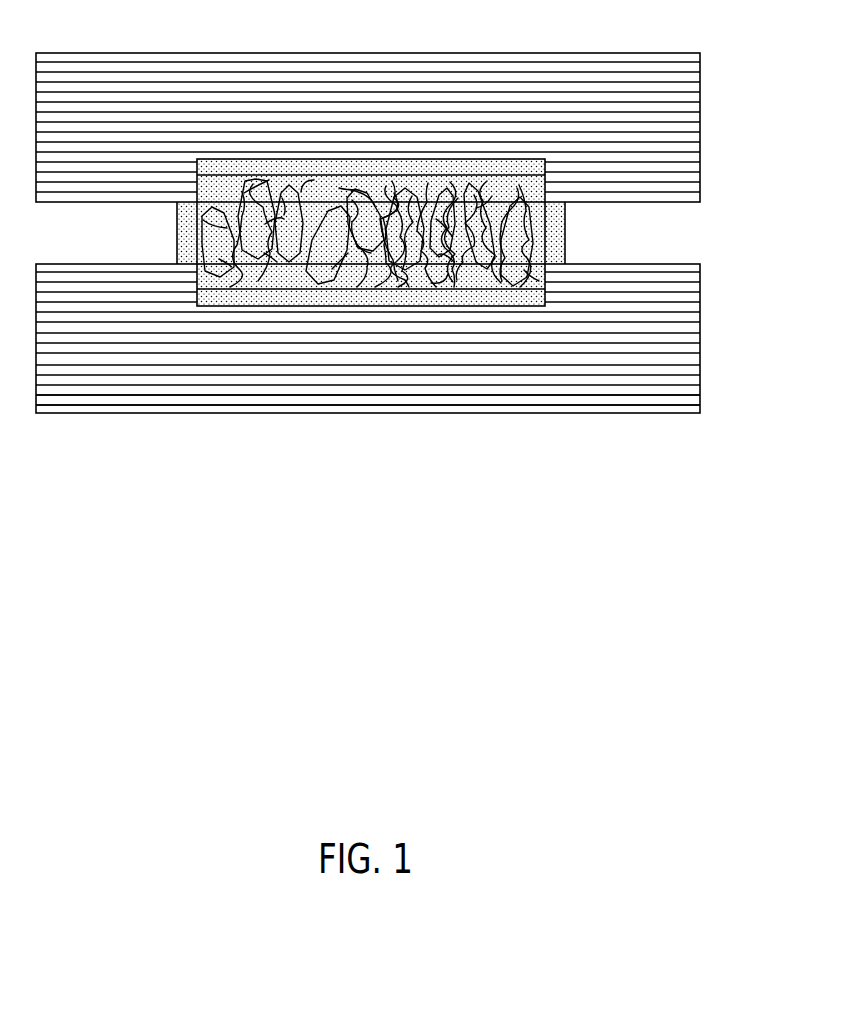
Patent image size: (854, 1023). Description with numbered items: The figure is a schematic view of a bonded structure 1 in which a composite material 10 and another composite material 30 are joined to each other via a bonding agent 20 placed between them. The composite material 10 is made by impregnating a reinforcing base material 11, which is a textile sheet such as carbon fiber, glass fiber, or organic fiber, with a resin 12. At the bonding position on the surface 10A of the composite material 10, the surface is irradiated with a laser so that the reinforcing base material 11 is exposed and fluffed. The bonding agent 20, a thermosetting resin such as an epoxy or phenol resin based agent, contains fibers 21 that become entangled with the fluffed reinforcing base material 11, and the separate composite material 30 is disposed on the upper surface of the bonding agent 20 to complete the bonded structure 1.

The bonded structure 1 is at (45, 32).
The composite material 10 is at (683, 463).
The surface of the composite material 10A is at (405, 298).
The reinforcing base material 11 is at (607, 397).
The resin 12 is at (663, 403).
The bonding agent 20 is at (408, 311).
The fiber 21 is at (197, 212).
The another composite material 30 is at (700, 71).